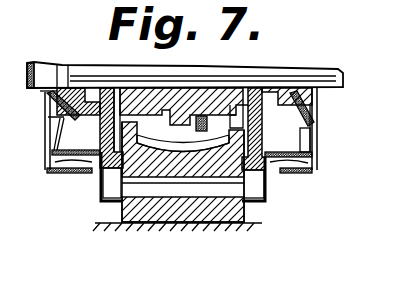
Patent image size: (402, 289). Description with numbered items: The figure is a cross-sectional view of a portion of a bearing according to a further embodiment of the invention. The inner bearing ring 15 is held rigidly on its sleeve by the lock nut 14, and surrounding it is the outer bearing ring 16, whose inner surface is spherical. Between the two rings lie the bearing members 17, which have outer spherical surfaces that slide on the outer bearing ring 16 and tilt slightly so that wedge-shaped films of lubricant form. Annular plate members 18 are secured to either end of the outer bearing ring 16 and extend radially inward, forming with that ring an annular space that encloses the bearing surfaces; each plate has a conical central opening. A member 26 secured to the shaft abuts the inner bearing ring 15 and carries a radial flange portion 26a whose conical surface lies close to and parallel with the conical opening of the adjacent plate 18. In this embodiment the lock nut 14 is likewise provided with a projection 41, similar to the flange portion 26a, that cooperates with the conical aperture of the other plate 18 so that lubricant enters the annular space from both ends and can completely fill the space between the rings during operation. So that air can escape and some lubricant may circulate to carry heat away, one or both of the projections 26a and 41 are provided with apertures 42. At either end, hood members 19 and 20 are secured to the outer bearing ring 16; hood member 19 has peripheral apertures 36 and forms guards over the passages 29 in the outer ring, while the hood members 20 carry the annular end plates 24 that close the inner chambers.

The member 26 is at (81, 86).
The radial flange portion 26a is at (112, 98).
The inner bearing ring 15 is at (194, 96).
The projection 41 is at (256, 98).
The lock nut 14 is at (288, 97).
The annular end plate 24 is at (58, 111).
The aperture 36 is at (47, 130).
The aperture 42 is at (100, 118).
The bearing member 17 is at (176, 112).
The passage 29 is at (183, 172).
The outer bearing ring 16 is at (195, 223).
The annular plate member 18 is at (101, 172).
The hood member 19 is at (100, 203).
The hood member 20 is at (70, 175).